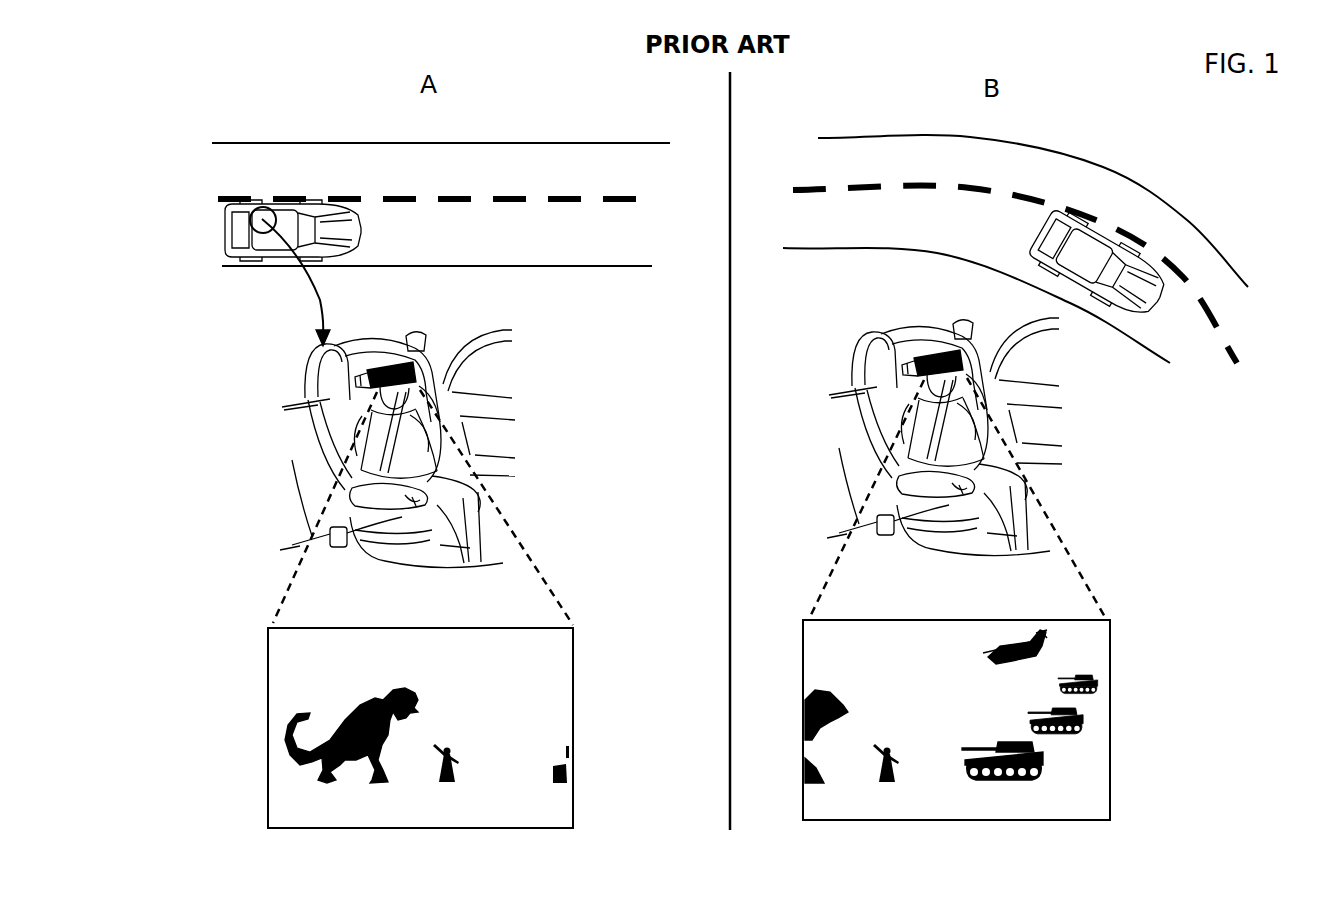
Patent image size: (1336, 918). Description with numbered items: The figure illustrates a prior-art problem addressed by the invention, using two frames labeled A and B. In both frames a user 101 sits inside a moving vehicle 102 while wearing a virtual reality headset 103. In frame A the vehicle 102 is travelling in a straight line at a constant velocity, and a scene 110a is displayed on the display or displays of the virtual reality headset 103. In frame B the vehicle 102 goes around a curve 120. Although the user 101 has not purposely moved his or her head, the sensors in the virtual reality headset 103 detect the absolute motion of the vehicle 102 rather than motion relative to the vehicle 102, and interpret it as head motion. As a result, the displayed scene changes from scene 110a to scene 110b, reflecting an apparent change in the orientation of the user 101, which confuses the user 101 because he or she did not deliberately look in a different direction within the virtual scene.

The user 101 is at (360, 427).
The vehicle 102 is at (250, 252).
The virtual reality headset 103 is at (397, 362).
The scene 110a is at (267, 737).
The scene 110b is at (1112, 733).
The curve 120 is at (1175, 210).